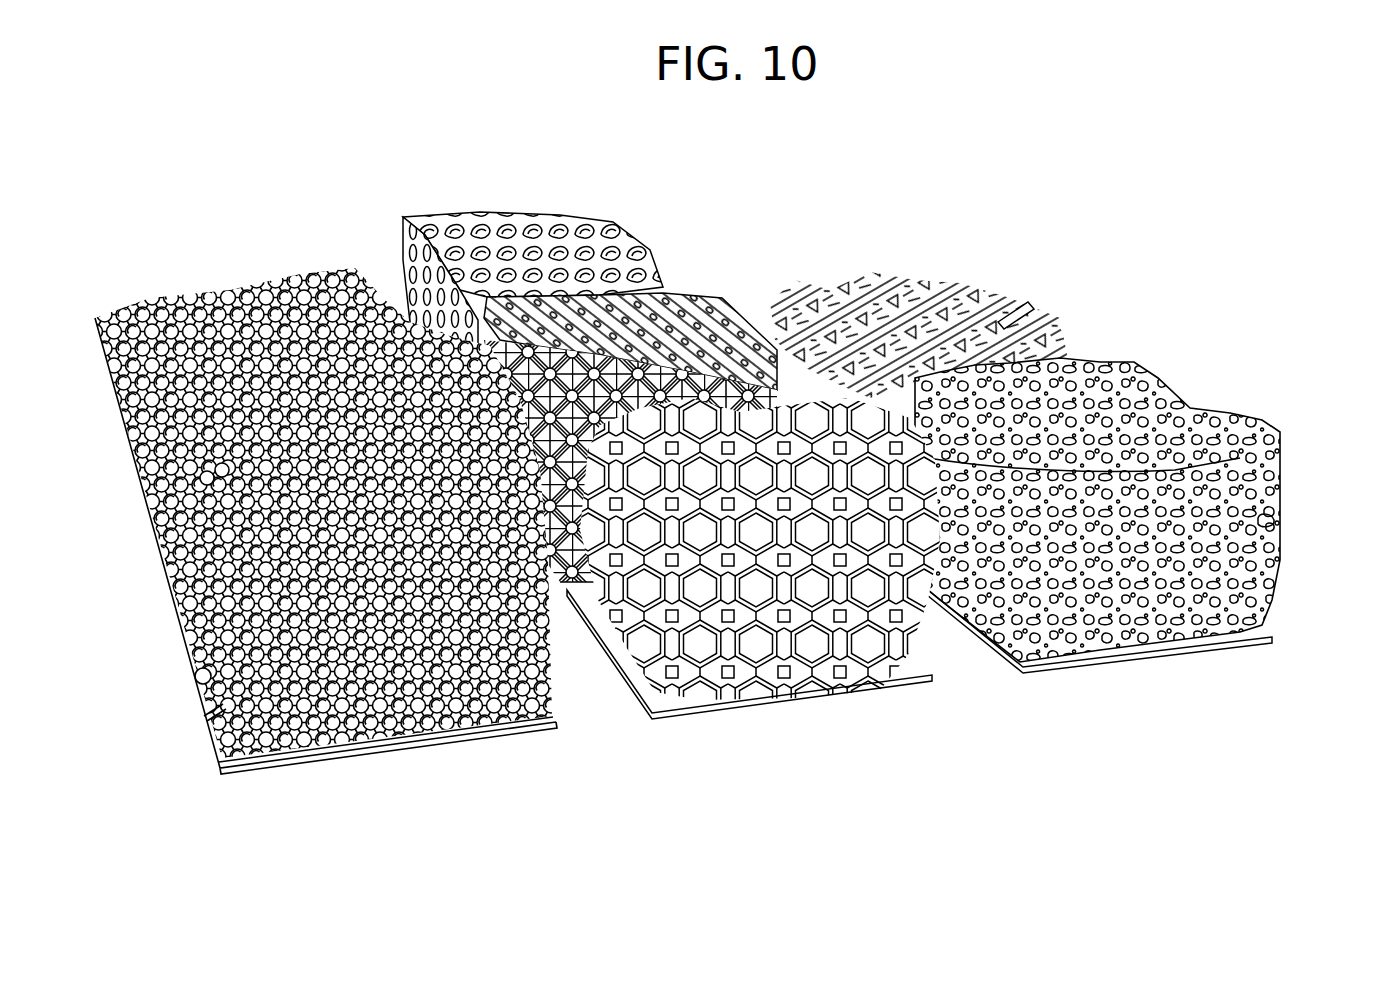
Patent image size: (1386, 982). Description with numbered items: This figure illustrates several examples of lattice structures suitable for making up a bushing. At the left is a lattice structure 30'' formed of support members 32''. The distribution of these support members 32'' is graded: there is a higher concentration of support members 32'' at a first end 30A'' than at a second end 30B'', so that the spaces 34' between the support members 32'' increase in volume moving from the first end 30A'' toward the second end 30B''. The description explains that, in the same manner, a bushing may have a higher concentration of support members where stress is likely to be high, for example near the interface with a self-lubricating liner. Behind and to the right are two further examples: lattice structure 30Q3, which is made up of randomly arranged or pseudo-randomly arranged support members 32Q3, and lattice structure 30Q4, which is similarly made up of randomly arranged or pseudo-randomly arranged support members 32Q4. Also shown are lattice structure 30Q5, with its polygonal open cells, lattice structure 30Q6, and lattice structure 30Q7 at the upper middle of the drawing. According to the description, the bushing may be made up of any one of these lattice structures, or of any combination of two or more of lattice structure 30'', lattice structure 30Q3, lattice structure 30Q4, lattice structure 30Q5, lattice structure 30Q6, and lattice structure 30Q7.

The lattice structure 30Q7 is at (455, 220).
The lattice structure 30Q6 is at (716, 298).
The lattice structure 30Q3 is at (937, 290).
The support members 32Q3 is at (1013, 312).
The lattice structure 30Q4 is at (1212, 425).
The support members 32Q4 is at (1268, 522).
The lattice structure 30Q5 is at (816, 668).
The lattice structure 30'' is at (323, 513).
The first end 30A'' is at (335, 576).
The second end 30B'' is at (146, 479).
The support members 32'' is at (164, 681).
The spaces 34' is at (184, 739).